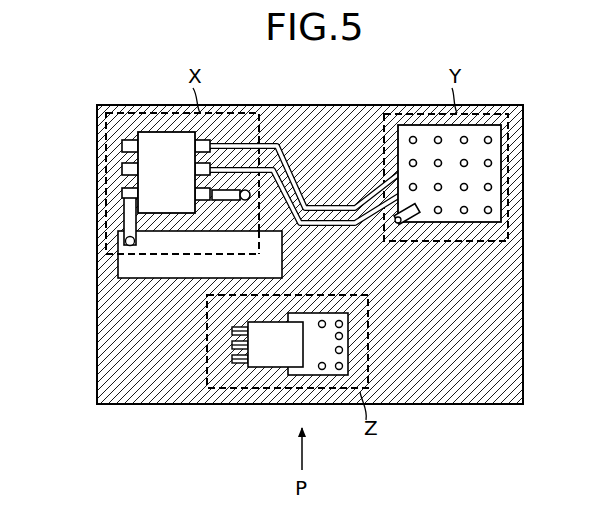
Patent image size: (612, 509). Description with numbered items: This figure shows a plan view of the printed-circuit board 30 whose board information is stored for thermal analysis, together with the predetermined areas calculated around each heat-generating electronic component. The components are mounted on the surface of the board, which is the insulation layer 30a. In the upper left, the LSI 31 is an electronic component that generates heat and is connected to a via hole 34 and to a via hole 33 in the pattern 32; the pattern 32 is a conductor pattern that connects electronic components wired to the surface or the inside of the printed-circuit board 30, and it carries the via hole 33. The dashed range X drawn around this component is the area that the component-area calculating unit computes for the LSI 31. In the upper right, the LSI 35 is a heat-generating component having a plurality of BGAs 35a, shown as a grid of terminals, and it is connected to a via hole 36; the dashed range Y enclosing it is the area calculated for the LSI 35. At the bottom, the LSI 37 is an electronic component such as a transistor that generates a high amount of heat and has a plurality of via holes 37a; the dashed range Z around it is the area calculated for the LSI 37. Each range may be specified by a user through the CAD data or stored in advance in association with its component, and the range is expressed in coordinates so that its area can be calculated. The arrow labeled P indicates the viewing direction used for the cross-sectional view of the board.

The printed-circuit board 30 is at (410, 105).
The insulation layer 30a is at (510, 300).
The LSI 31 is at (170, 140).
The pattern 32 is at (130, 270).
The via hole 33 is at (125, 236).
The via hole 34 is at (243, 190).
The LSI 35 is at (505, 172).
The BGAs 35a is at (492, 140).
The via hole 36 is at (400, 224).
The LSI 37 is at (281, 382).
The via holes 37a is at (322, 370).